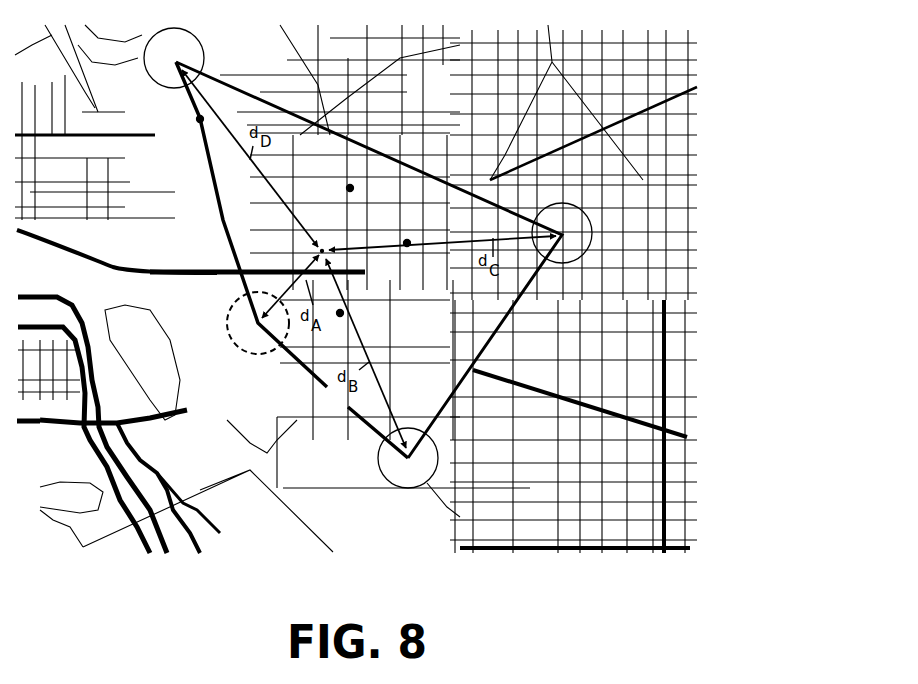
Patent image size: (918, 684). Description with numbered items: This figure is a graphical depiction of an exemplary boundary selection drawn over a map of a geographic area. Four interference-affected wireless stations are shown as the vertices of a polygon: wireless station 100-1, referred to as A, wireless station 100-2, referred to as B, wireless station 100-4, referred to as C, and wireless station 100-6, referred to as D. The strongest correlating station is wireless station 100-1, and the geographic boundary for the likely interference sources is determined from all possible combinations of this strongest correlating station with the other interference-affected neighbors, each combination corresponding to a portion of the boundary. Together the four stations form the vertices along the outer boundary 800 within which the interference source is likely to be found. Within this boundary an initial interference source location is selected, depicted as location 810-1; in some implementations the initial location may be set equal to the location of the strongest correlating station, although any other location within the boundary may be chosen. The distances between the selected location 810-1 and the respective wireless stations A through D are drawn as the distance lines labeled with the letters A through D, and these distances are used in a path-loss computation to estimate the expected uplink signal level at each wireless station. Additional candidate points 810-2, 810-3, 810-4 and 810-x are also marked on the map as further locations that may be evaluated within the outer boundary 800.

The outer boundary 800 is at (445, 177).
The wireless station 100-6 is at (160, 82).
The wireless station 100-4 is at (578, 248).
The wireless station 100-2 is at (395, 467).
The wireless station 100-1 is at (250, 337).
The location 810-1 is at (318, 251).
The location point 810-2 is at (199, 122).
The location point 810-3 is at (348, 187).
The location point 810-4 is at (343, 315).
The location point 810-x is at (407, 246).